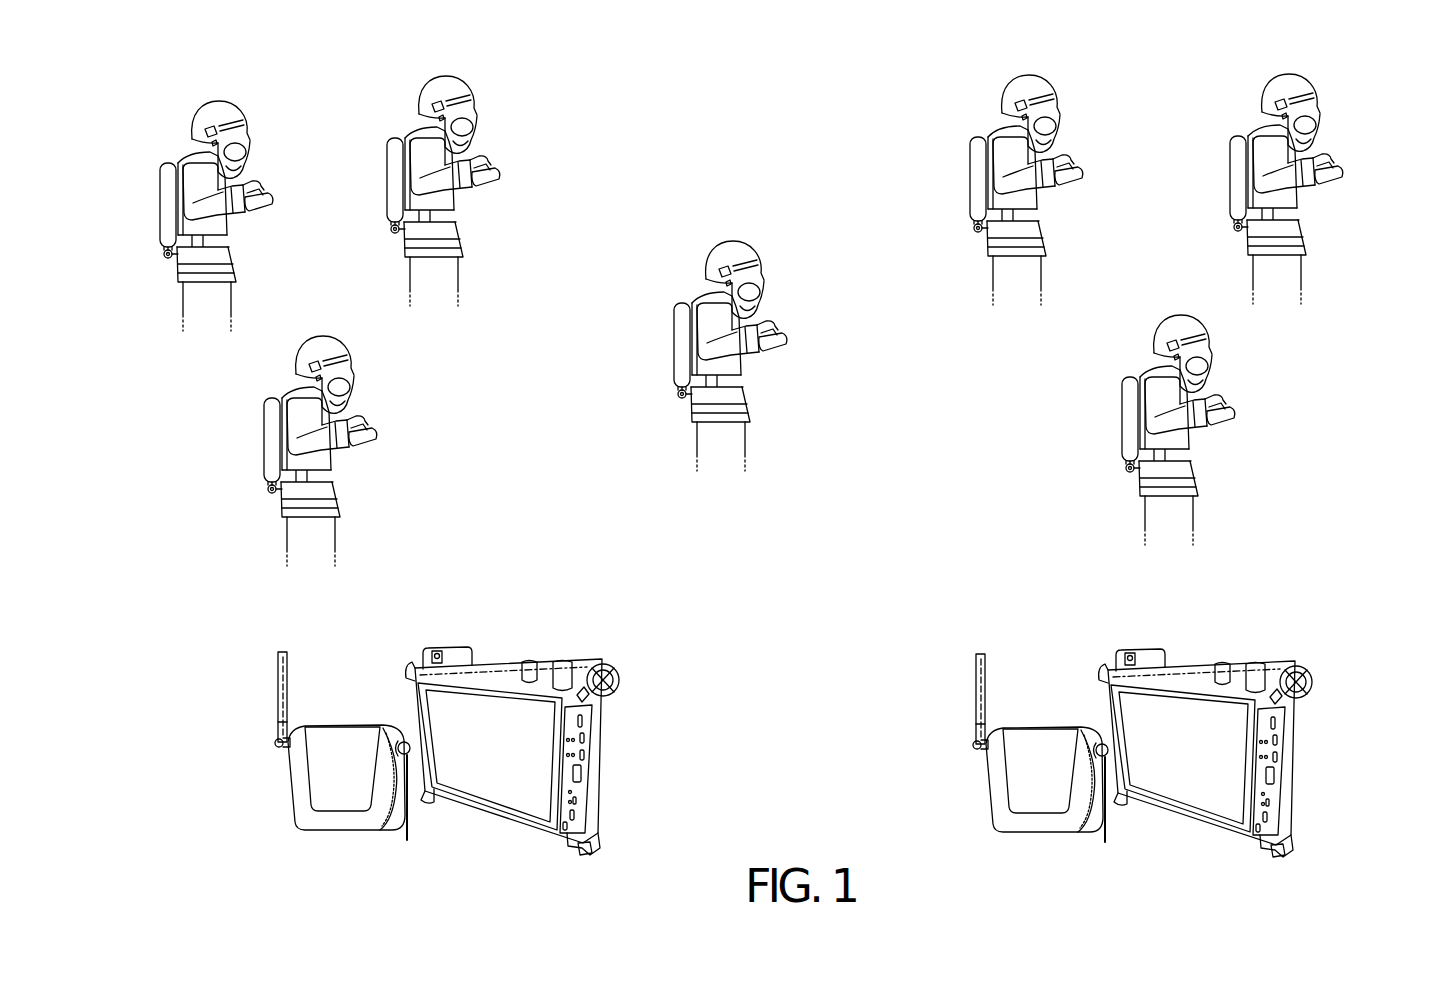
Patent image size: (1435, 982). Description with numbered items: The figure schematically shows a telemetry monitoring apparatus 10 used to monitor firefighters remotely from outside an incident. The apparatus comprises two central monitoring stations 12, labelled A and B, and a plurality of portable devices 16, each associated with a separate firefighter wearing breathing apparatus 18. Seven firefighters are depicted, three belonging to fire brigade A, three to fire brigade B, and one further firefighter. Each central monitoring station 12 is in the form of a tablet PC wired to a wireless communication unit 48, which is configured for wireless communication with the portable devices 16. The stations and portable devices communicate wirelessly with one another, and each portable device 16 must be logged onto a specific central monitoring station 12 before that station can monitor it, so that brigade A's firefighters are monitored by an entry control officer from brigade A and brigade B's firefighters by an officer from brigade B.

The telemetry monitoring apparatus 10 is at (756, 132).
The central monitoring station 12 is at (491, 634).
The portable device 16 is at (305, 166).
The breathing apparatus 18 is at (161, 210).
The wireless communication unit 48 is at (342, 743).